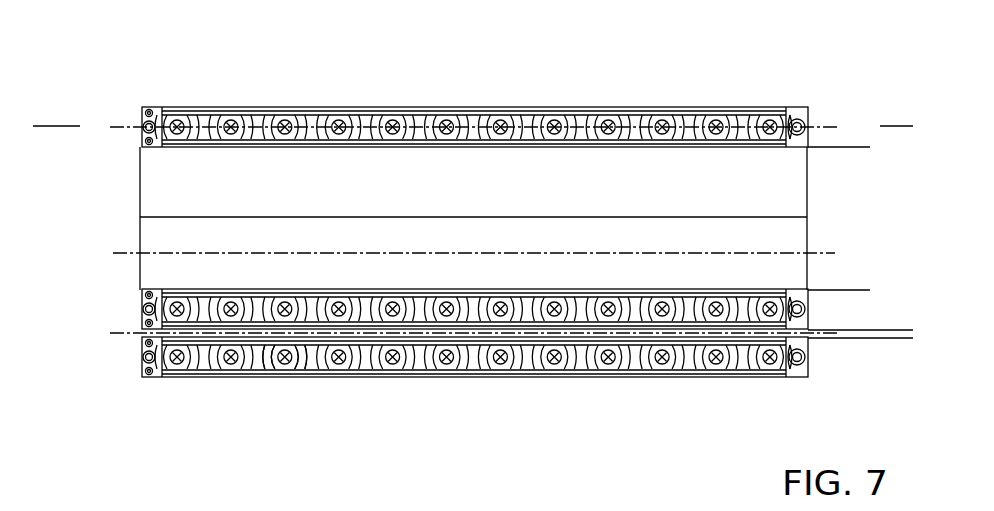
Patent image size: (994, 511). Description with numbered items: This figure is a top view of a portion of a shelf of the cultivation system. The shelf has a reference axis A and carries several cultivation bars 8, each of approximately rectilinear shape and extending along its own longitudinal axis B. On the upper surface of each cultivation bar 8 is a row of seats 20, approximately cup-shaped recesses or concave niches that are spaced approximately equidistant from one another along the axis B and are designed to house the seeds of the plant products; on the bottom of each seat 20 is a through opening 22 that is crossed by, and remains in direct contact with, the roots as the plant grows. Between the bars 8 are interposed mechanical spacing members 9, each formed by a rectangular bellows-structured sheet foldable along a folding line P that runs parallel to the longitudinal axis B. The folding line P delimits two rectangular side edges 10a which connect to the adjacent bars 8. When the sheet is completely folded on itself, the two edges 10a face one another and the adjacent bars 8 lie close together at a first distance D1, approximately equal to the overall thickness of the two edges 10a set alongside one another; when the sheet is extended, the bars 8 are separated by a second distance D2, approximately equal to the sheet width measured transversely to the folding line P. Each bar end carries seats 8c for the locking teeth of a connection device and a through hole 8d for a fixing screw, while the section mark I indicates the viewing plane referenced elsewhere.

The cultivation bar 8 is at (299, 107).
The seat 8c is at (140, 140).
The through hole 8d is at (808, 362).
The mechanical spacing member 9 is at (139, 205).
The rectangular side edge 10a is at (247, 185).
The seat 20 is at (500, 133).
The through opening 22 is at (285, 362).
The reference axis A is at (113, 254).
The longitudinal axis B is at (118, 127).
The folding line P is at (548, 217).
The first distance D1 is at (909, 373).
The second distance D2 is at (863, 323).
The section line I is at (55, 128).